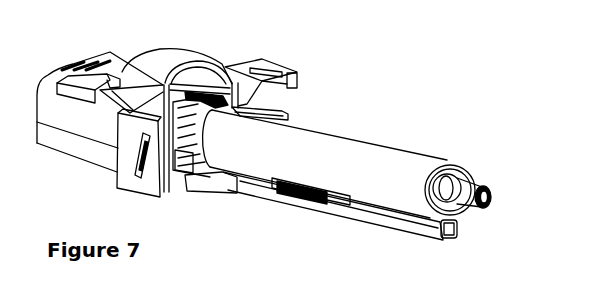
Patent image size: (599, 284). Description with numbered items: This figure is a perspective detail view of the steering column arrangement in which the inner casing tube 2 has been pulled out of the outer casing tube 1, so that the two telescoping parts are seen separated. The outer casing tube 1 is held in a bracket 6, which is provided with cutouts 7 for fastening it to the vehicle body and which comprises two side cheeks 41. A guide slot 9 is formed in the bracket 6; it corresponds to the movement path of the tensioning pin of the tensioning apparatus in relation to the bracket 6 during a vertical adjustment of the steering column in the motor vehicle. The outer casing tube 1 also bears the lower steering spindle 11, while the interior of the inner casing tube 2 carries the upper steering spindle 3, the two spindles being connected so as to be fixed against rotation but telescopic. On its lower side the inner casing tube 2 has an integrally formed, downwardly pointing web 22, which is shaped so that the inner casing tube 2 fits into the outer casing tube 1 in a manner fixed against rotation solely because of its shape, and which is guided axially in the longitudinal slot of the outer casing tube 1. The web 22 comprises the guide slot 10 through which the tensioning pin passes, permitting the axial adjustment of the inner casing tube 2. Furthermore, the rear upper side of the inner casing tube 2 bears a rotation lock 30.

The outer casing tube 1 is at (55, 133).
The inner casing tube 2 is at (370, 153).
The upper steering spindle 3 is at (456, 193).
The bracket 6 is at (167, 62).
The cutouts 7 is at (263, 62).
The guide slot 9 is at (137, 158).
The guide slot 10 is at (328, 205).
The lower steering spindle 11 is at (196, 106).
The web 22 is at (403, 218).
The rotation lock 30 is at (268, 112).
The side cheeks 41 is at (152, 188).